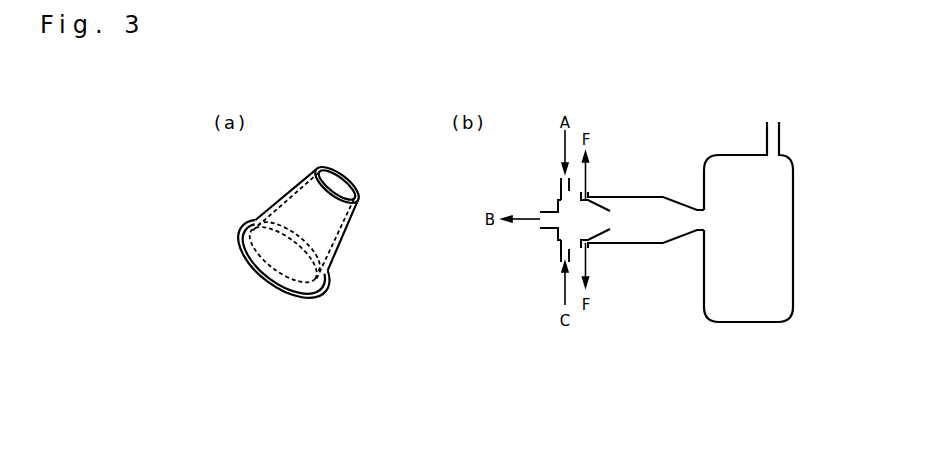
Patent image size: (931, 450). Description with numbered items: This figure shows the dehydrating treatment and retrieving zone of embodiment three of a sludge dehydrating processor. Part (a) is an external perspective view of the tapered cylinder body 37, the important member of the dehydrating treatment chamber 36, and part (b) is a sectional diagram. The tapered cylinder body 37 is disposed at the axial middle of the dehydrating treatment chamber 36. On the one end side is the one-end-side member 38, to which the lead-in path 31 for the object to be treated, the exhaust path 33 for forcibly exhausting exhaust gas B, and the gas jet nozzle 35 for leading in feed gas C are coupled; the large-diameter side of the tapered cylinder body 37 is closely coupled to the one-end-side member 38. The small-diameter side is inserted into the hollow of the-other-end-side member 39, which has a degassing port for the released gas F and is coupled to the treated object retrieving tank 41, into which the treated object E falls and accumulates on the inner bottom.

The lead-in path for the object to be treated 31 is at (561, 183).
The exhaust path 33 is at (550, 230).
The gas jet nozzle 35 is at (560, 252).
The dehydrating treatment chamber 36 is at (633, 180).
The tapered cylinder body 37 is at (340, 240).
The one-end-side member 38 is at (558, 203).
The other-end-side member 39 is at (655, 242).
The treated object retrieving tank 41 is at (793, 215).